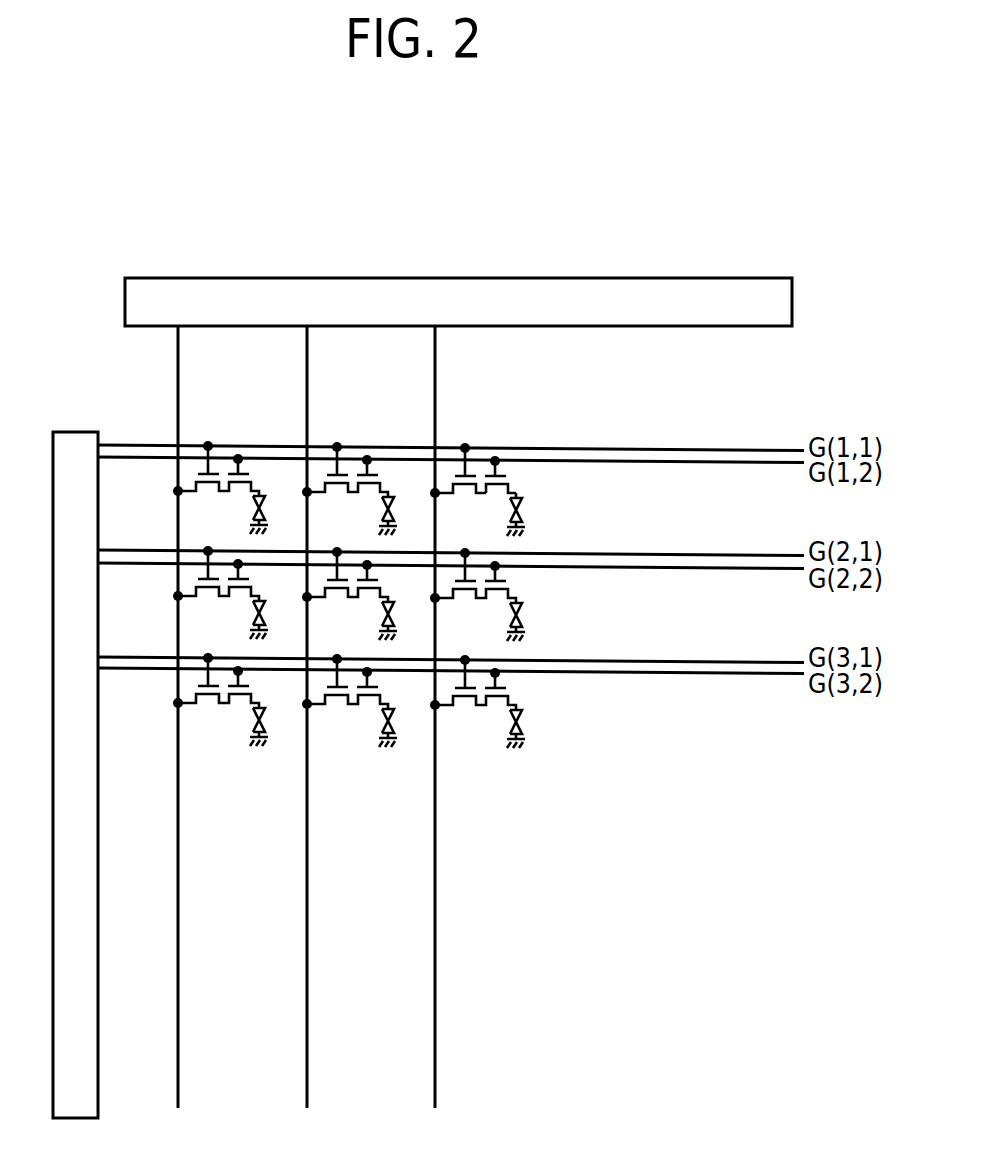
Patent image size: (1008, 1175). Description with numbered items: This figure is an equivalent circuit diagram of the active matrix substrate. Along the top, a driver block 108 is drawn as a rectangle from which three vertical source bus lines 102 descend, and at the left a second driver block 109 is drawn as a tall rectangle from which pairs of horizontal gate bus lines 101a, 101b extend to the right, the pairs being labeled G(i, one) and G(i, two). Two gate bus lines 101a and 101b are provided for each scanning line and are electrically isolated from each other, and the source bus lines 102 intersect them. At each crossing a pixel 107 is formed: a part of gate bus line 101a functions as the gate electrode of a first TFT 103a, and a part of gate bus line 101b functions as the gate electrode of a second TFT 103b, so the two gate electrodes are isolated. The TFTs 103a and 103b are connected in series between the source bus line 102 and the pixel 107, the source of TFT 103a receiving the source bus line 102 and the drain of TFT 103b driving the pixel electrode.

The data line driver circuit 108 is at (452, 278).
The gate line driver circuit 109 is at (78, 430).
The source bus line 102 is at (434, 395).
The gate bus line 101a is at (673, 451).
The gate bus line 101b is at (653, 465).
The TFT 103a is at (463, 492).
The TFT 103b is at (498, 494).
The pixel 107 is at (521, 509).